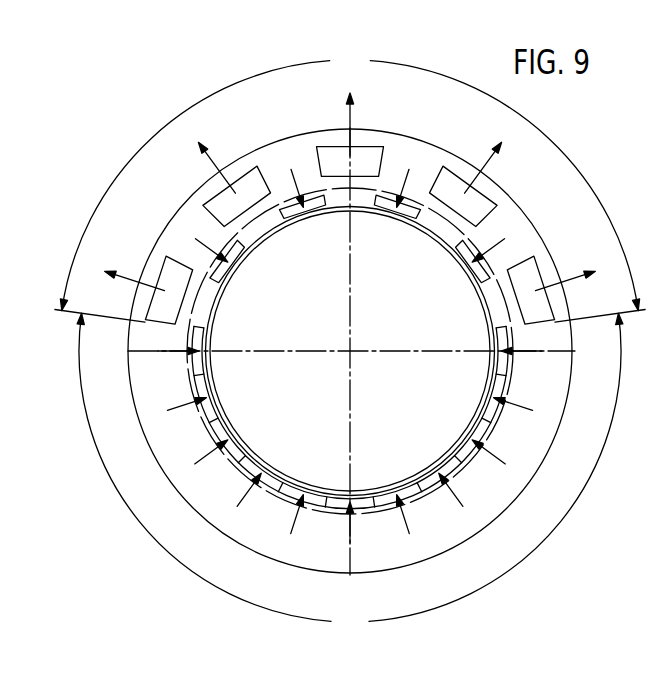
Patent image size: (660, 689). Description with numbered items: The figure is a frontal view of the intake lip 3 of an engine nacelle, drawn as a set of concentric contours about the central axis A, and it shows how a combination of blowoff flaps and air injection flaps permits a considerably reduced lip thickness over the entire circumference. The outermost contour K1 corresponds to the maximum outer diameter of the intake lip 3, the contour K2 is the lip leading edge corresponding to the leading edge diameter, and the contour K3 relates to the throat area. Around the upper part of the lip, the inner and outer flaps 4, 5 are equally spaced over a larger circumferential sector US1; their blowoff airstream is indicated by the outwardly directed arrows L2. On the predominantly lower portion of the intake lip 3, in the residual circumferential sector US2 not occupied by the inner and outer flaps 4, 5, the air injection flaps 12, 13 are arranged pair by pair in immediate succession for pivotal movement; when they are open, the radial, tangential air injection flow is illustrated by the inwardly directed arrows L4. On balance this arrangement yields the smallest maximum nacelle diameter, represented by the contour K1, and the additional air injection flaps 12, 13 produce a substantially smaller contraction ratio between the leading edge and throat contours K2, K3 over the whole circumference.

The intake lip 3 is at (341, 347).
The inner flap 4 is at (321, 243).
The outer flap 5 is at (234, 192).
The air injection flap 12 is at (312, 212).
The air injection flap 13 is at (350, 352).
The rotation axis A is at (351, 351).
The outer contour K1 is at (234, 541).
The lip leading edge K2 is at (200, 421).
The throat contour K3 is at (215, 381).
The blowoff airstream L2 is at (351, 114).
The air injection flow L4 is at (425, 527).
The circumferential sector US1 is at (350, 185).
The residual circumferential sector US2 is at (350, 482).